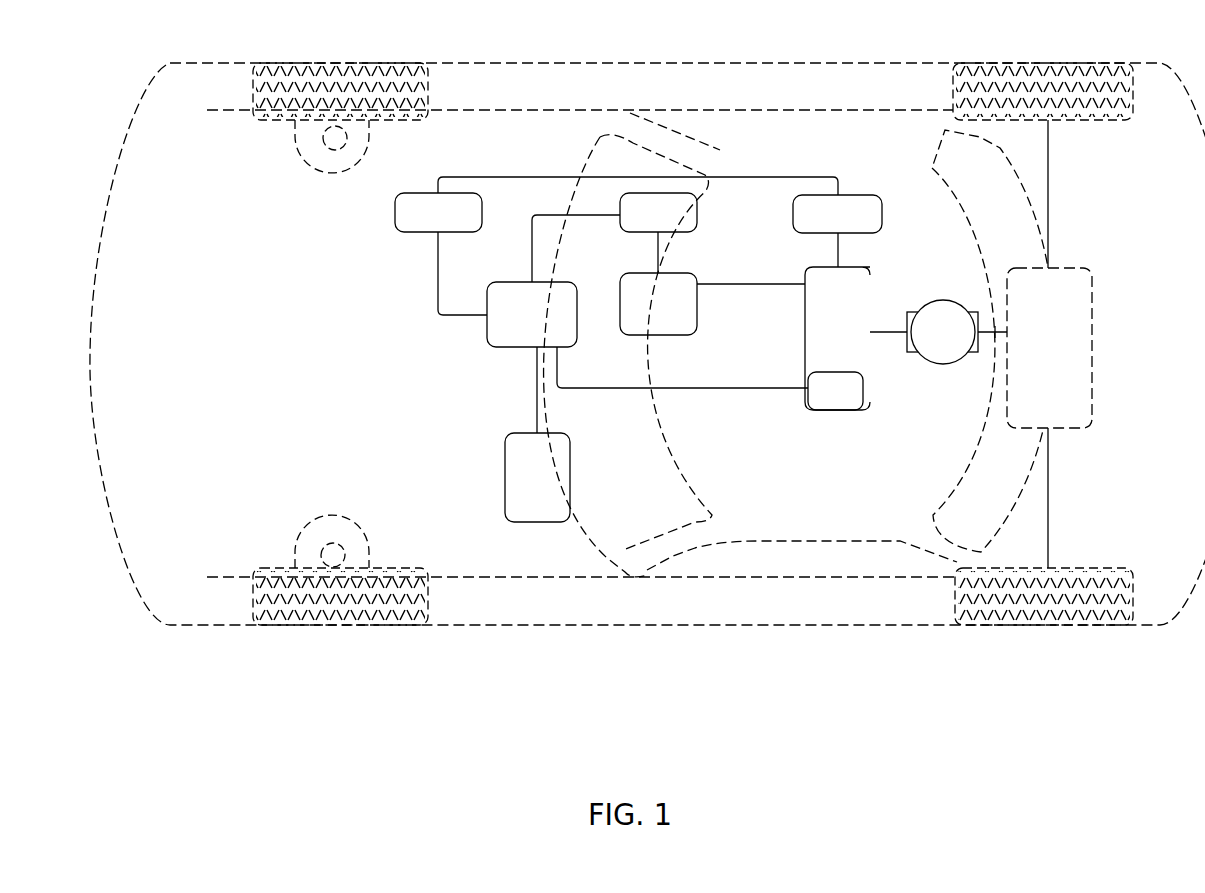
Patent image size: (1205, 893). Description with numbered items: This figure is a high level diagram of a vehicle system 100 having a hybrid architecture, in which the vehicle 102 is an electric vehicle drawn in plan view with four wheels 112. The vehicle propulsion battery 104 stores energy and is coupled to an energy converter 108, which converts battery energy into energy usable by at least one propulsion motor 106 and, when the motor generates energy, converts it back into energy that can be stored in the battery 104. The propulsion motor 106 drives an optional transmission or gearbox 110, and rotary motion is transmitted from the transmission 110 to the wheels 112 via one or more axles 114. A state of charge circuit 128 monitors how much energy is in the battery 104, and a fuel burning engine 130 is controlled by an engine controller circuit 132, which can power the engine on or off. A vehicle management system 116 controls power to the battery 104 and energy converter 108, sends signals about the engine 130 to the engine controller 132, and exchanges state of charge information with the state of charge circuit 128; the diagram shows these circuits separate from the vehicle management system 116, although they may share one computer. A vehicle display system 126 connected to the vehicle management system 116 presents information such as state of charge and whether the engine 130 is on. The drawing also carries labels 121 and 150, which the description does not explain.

The vehicle system 100 is at (468, 43).
The vehicle 102 is at (672, 62).
The vehicle propulsion battery 104 is at (712, 304).
The propulsion motor 106 is at (943, 300).
The energy converter 108 is at (856, 338).
The transmission or gearbox 110 is at (1095, 332).
The wheels 112 is at (1087, 62).
The axles 114 is at (1052, 200).
The vehicle management system 116 is at (647, 324).
The drive wheel 121 is at (1030, 625).
The vehicle display system 126 is at (537, 477).
The state of charge circuit 128 is at (658, 233).
The fuel burning engine 130 is at (837, 231).
The engine controller circuit 132 is at (616, 246).
The power converter 150 is at (835, 391).